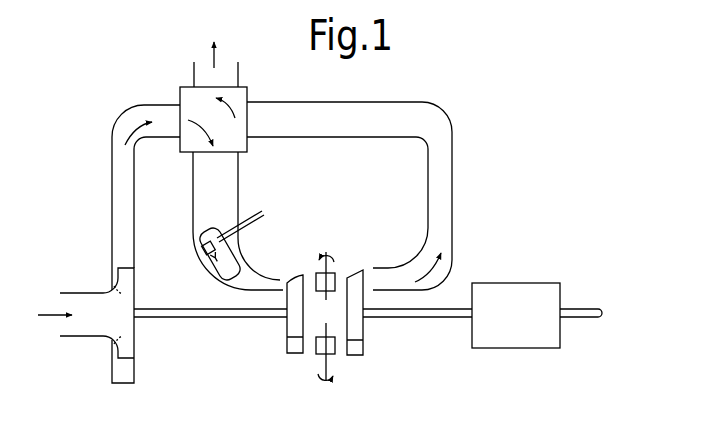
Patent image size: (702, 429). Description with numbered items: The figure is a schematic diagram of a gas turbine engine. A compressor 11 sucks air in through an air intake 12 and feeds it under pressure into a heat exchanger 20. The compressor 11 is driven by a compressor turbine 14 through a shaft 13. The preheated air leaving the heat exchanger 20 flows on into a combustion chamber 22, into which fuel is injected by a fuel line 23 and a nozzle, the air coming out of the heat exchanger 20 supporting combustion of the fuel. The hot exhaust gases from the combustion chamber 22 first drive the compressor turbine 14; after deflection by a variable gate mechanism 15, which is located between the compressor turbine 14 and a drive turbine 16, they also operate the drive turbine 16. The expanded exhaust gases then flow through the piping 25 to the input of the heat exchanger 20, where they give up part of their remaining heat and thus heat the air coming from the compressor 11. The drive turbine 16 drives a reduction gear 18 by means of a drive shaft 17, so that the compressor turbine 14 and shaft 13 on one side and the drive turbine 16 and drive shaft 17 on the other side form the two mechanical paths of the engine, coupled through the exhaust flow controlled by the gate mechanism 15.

The compressor 11 is at (127, 338).
The air intake 12 is at (76, 324).
The shaft 13 is at (207, 318).
The compressor turbine 14 is at (295, 346).
The variable gate mechanism 15 is at (333, 280).
The drive turbine 16 is at (357, 350).
The drive shaft 17 is at (402, 317).
The reduction gear 18 is at (499, 348).
The heat exchanger 20 is at (248, 93).
The combustion chamber 22 is at (200, 238).
The fuel line 23 is at (252, 220).
The piping 25 is at (320, 101).